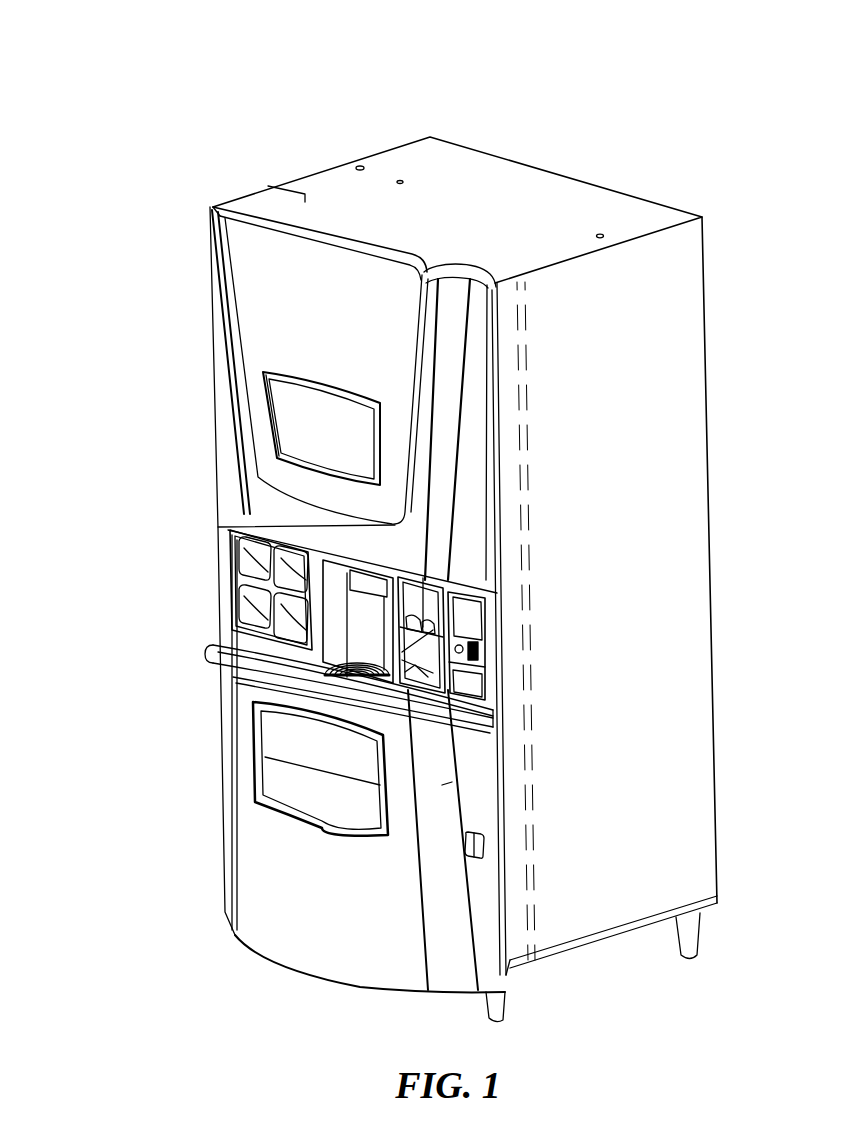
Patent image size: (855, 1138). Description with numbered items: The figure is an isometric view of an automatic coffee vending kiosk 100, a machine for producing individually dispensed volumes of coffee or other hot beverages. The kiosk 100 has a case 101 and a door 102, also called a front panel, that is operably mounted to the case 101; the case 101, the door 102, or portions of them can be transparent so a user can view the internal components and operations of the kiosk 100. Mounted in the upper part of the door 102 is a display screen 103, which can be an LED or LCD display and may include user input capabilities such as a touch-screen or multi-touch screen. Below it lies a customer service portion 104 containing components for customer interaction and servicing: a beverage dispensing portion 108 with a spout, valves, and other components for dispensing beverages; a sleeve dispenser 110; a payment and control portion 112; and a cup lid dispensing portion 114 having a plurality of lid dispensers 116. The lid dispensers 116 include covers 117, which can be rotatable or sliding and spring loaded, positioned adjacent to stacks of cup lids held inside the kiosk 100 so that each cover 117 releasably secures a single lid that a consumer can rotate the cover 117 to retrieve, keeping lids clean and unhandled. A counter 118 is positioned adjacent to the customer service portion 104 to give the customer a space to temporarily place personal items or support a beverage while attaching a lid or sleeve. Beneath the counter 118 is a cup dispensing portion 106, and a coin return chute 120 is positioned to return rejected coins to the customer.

The automatic coffee vending kiosk 100 is at (690, 103).
The case 101 is at (565, 190).
The door 102 is at (400, 250).
The display screen 103 is at (313, 407).
The customer service portion 104 is at (164, 606).
The cup dispensing portion 106 is at (270, 766).
The beverage dispensing portion 108 is at (332, 647).
The sleeve dispenser 110 is at (430, 605).
The payment and control portion 112 is at (483, 619).
The cup lid dispensing portion 114 is at (222, 583).
The lid dispensers 116 is at (297, 568).
The covers 117 is at (247, 607).
The counter 118 is at (417, 705).
The coin return chute 120 is at (484, 848).